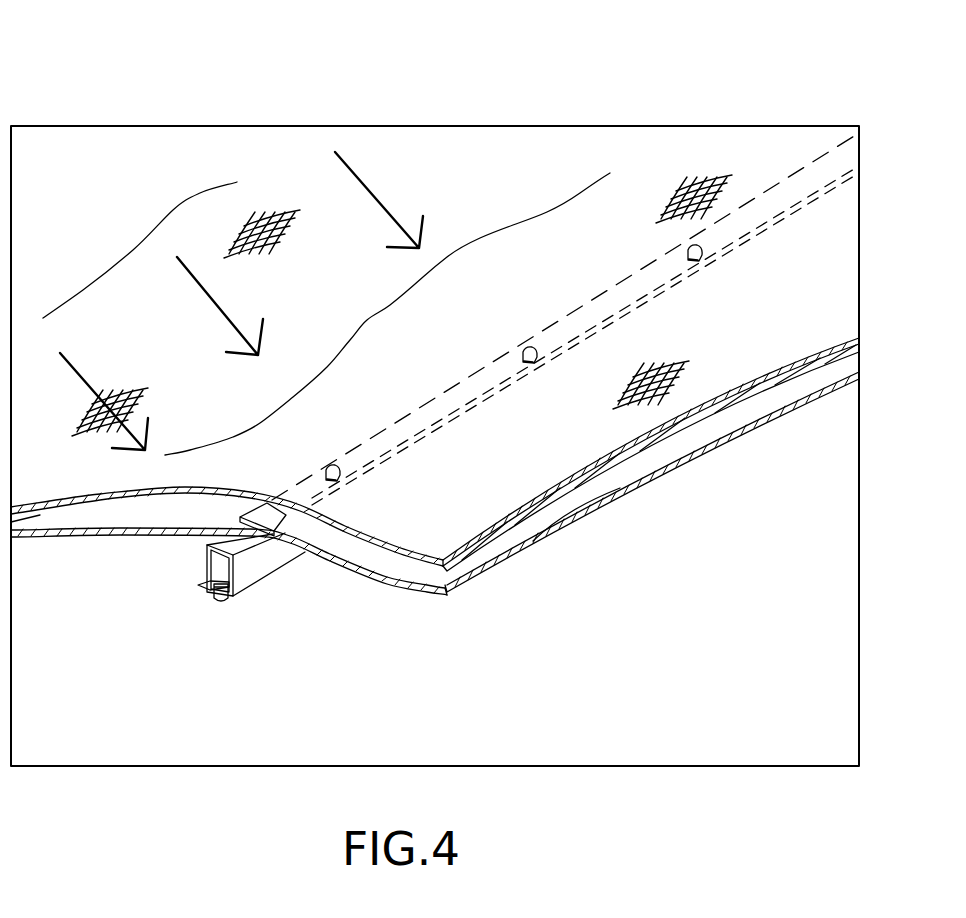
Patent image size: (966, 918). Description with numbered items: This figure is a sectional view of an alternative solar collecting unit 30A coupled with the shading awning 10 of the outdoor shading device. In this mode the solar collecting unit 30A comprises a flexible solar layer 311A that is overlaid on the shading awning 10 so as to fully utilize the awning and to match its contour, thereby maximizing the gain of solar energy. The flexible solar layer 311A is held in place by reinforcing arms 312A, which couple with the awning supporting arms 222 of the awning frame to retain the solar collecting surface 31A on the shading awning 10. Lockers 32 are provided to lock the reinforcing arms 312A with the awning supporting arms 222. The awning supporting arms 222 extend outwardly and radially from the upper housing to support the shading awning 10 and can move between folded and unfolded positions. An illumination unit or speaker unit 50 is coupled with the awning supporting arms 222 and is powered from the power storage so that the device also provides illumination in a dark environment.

The solar collecting unit 30A is at (563, 113).
The solar collecting surface 31A is at (460, 177).
The flexible solar layer 311A is at (580, 289).
The reinforcing arms 312A is at (273, 518).
The locker 32 is at (703, 260).
The shading awning 10 is at (152, 512).
The awning supporting arms 222 is at (253, 568).
The illumination unit or speaker unit 50 is at (221, 602).